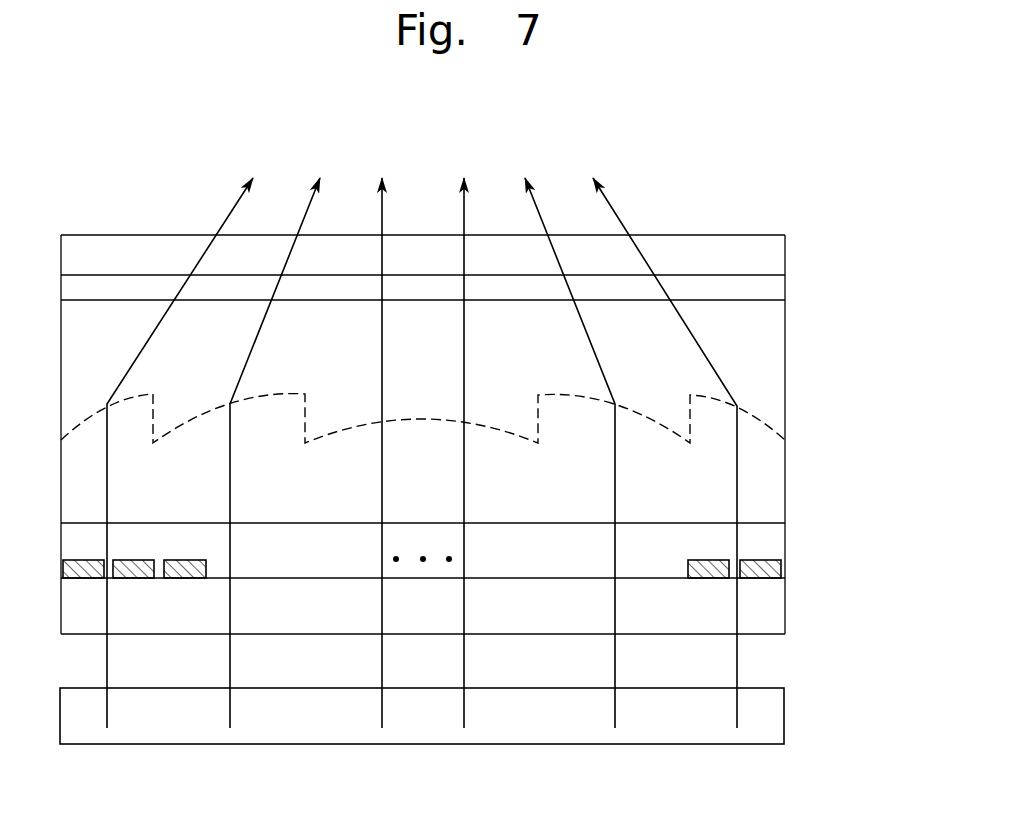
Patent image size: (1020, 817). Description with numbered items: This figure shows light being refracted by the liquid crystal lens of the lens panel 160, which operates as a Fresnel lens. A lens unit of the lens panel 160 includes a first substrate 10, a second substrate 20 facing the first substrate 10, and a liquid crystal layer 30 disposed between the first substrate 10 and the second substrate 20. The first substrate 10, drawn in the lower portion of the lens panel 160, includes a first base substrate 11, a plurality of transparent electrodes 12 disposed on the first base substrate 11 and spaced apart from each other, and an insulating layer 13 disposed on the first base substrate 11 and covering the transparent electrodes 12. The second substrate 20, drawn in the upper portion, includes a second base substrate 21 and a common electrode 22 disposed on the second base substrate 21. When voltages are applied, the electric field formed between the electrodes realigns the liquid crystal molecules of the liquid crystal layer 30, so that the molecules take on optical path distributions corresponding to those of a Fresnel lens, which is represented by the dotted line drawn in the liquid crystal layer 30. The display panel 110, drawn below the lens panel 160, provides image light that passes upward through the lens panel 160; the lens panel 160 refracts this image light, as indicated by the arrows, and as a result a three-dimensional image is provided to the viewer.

The lens panel 160 is at (797, 171).
The second substrate 20 is at (856, 235).
The second base substrate 21 is at (776, 247).
The common electrode 22 is at (776, 291).
The liquid crystal layer 30 is at (786, 411).
The first substrate 10 is at (856, 525).
The insulating layer 13 is at (776, 537).
The transparent electrodes 12 is at (766, 570).
The first base substrate 11 is at (776, 598).
The display panel 110 is at (776, 720).